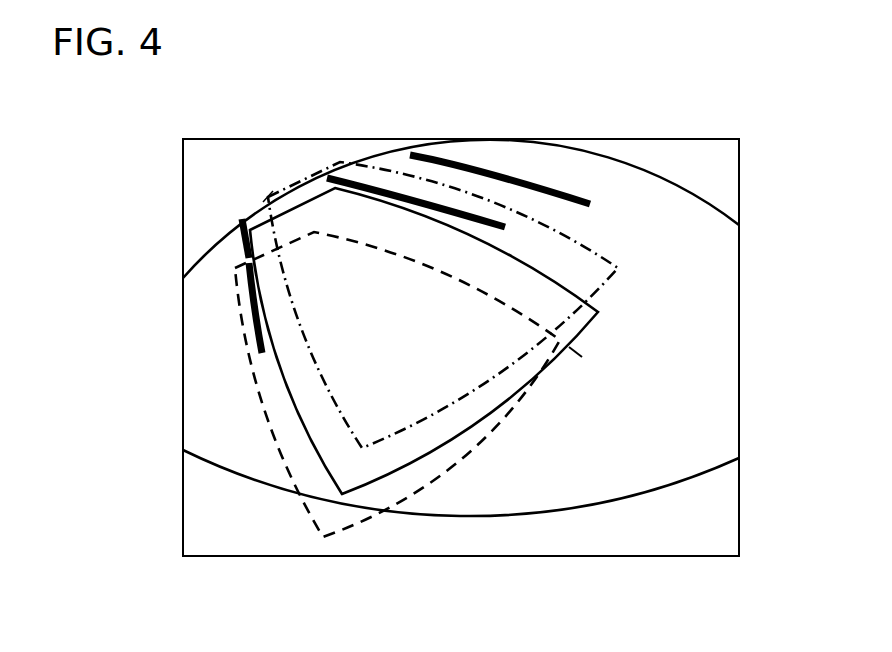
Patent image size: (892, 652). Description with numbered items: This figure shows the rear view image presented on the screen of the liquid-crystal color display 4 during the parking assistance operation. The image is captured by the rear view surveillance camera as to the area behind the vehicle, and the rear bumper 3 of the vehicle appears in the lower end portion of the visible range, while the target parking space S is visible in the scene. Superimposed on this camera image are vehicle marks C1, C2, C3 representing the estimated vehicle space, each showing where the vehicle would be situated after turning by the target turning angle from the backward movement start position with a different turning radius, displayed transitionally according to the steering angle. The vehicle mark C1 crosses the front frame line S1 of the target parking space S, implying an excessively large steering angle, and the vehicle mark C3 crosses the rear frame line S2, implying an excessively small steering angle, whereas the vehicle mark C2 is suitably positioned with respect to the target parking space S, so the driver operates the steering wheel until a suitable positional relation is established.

The rear bumper 3 is at (255, 482).
The liquid-crystal color display 4 is at (183, 500).
The target parking space S is at (228, 250).
The front frame line S1 is at (252, 317).
The rear frame line S2 is at (377, 183).
The vehicle mark C1 is at (517, 422).
The vehicle mark C2 is at (577, 290).
The vehicle mark C3 is at (587, 248).